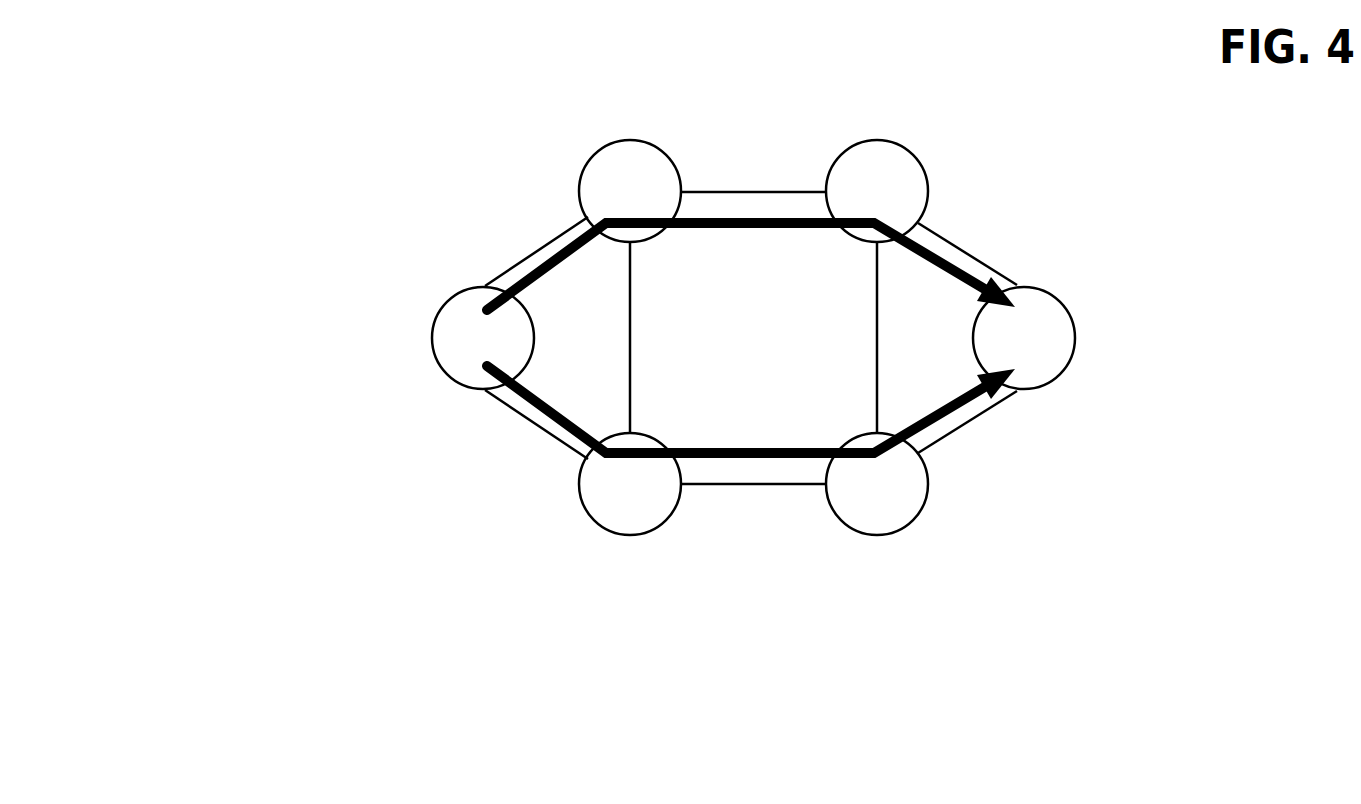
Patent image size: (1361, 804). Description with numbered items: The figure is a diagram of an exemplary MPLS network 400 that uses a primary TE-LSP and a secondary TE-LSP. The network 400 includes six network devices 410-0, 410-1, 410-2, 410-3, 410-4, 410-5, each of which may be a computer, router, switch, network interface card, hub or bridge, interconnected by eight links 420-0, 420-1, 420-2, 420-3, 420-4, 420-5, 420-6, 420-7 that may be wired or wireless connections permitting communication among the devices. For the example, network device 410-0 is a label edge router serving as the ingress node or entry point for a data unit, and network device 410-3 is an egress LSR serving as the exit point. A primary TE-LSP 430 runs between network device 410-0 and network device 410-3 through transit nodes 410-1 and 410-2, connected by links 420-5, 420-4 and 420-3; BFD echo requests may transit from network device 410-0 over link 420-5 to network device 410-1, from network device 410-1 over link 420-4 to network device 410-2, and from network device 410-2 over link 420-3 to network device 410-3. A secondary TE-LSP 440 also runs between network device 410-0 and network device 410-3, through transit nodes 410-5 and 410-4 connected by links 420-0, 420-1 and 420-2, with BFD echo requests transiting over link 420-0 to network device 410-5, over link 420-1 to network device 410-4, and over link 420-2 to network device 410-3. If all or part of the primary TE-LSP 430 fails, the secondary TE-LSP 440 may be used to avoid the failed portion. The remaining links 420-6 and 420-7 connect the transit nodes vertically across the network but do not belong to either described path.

The MPLS network 400 is at (292, 131).
The network device 410-0 is at (515, 354).
The network device 410-1 is at (662, 207).
The network device 410-2 is at (909, 207).
The network device 410-3 is at (1056, 354).
The network device 410-4 is at (909, 500).
The network device 410-5 is at (662, 500).
The link 420-0 is at (530, 420).
The link 420-1 is at (752, 485).
The link 420-2 is at (972, 420).
The link 420-3 is at (962, 247).
The link 420-4 is at (751, 190).
The link 420-5 is at (538, 250).
The link 420-6 is at (630, 330).
The link 420-7 is at (875, 387).
The primary TE-LSP 430 is at (818, 229).
The secondary TE-LSP 440 is at (752, 447).